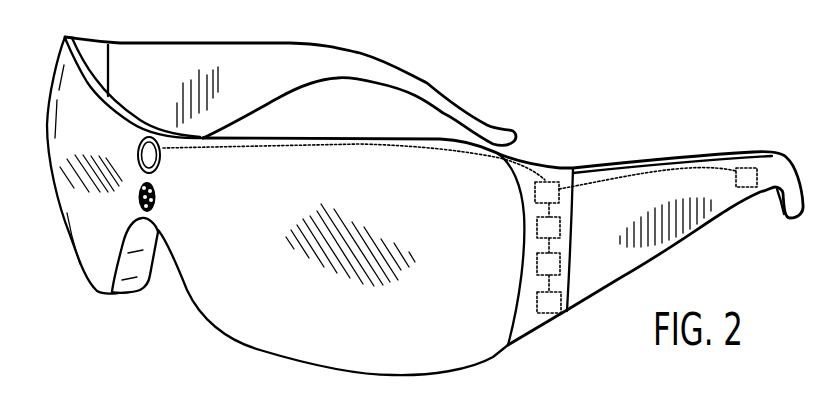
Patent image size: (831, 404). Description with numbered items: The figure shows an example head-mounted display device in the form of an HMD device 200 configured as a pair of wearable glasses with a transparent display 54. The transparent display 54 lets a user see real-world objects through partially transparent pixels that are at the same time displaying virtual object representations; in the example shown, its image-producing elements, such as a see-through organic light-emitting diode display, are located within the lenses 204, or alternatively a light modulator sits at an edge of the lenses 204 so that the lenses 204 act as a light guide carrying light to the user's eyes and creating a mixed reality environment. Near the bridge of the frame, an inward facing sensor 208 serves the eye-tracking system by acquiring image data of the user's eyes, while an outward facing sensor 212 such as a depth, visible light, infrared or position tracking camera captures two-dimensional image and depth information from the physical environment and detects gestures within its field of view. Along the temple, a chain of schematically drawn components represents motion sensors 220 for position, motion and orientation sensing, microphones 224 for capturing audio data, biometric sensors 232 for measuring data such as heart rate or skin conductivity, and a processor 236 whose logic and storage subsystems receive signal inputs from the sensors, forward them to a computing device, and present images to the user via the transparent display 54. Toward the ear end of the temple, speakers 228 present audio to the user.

The HMD device 200 is at (83, 330).
The lenses 204 is at (88, 267).
The transparent display 54 is at (238, 307).
The inward facing sensor 208 is at (164, 150).
The outward facing sensor 212 is at (160, 195).
The motion sensors 220 is at (555, 181).
The microphones 224 is at (562, 219).
The speakers 228 is at (752, 168).
The biometric sensors 232 is at (562, 257).
The processor 236 is at (551, 314).